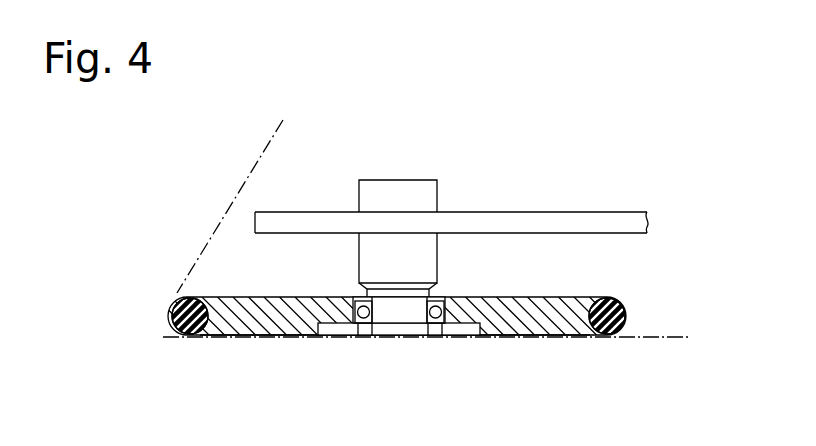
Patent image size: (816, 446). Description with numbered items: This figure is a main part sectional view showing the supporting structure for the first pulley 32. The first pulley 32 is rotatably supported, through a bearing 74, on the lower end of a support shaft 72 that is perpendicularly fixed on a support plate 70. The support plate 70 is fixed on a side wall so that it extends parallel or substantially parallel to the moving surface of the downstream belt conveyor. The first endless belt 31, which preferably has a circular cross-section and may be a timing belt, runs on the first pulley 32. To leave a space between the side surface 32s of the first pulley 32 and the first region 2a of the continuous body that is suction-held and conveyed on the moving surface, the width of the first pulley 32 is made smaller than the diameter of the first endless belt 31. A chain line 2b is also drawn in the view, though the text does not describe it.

The support plate 70 is at (303, 213).
The support shaft 72 is at (438, 258).
The bearing 74 is at (388, 316).
The first endless belt 31 is at (172, 302).
The first pulley 32 is at (296, 297).
The side surface of the first pulley 32s is at (228, 336).
The first region of the continuous body 2a is at (658, 337).
The inclined reference line 2b is at (208, 244).